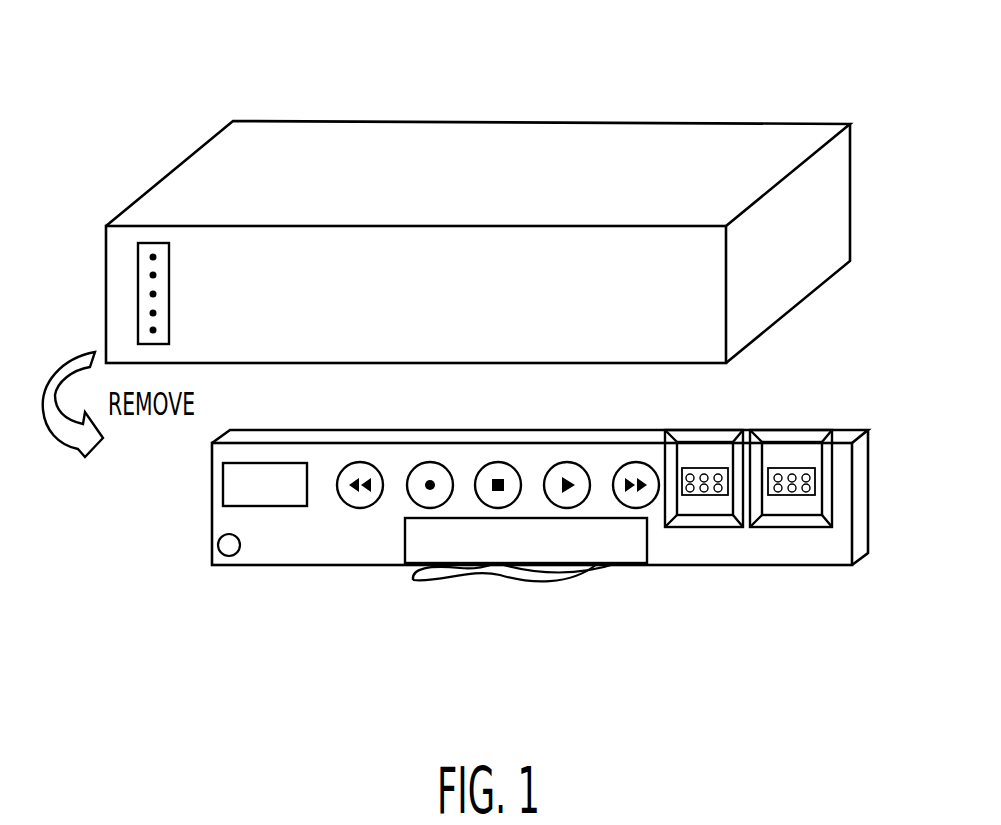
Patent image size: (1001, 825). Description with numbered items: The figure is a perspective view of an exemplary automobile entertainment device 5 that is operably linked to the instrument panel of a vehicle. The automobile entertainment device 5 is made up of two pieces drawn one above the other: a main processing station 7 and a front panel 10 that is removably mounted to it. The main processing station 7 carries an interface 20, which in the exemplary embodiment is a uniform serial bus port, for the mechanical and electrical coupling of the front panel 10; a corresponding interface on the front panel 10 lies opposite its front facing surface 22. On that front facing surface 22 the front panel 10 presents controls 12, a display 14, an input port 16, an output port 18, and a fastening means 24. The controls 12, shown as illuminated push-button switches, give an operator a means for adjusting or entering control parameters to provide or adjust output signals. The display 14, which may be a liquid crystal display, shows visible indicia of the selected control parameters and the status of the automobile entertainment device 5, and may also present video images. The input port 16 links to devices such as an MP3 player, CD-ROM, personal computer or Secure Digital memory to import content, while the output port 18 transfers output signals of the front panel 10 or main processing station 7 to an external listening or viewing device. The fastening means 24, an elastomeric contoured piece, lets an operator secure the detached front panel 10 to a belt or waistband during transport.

The automobile entertainment device 5 is at (848, 29).
The main processing station 7 is at (350, 120).
The front panel 10 is at (797, 430).
The controls 12 is at (358, 508).
The display 14 is at (632, 565).
The input port 16 is at (705, 527).
The output port 18 is at (873, 475).
The interface 20 is at (138, 274).
The front facing surface 22 is at (223, 486).
The fastening means 24 is at (465, 570).